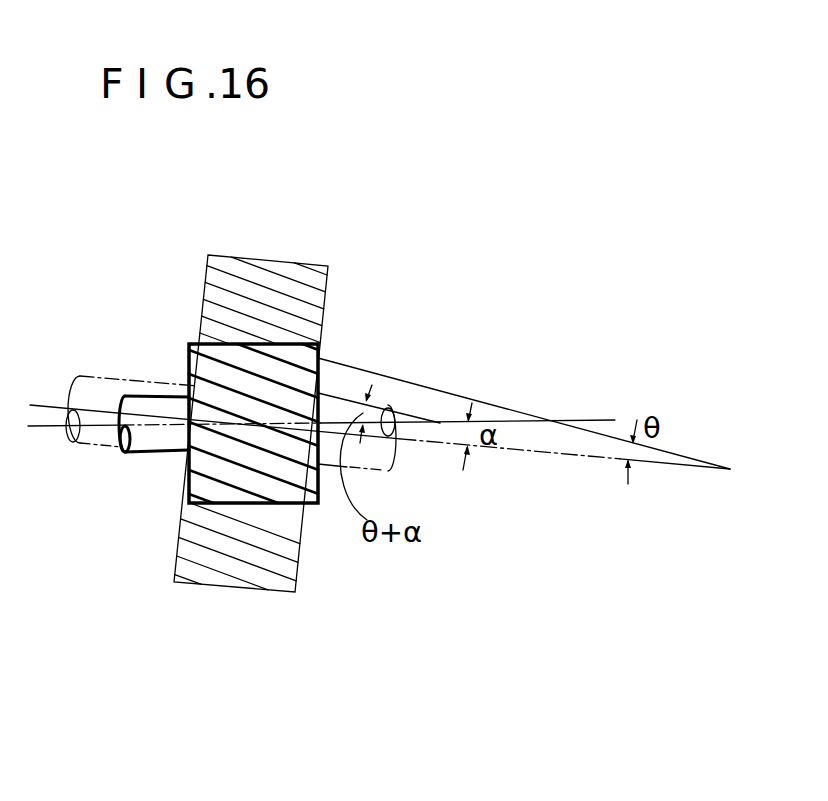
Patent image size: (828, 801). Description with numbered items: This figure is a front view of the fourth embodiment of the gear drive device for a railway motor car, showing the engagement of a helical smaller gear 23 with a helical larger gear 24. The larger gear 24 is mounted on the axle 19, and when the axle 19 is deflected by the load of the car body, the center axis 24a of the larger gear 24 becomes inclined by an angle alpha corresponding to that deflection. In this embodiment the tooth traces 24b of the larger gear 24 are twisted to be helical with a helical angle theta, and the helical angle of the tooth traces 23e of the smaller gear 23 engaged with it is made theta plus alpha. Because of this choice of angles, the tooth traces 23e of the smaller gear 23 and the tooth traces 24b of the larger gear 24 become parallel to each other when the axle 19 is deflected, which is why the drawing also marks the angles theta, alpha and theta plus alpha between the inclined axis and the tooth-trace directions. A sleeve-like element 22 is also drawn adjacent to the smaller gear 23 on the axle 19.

The axle 19 is at (84, 447).
The eccentric sleeve 22 is at (155, 396).
The smaller gear 23 is at (295, 344).
The tooth traces of the smaller gear 23e is at (280, 388).
The larger gear 24 is at (232, 589).
The center axis of the larger gear 24a is at (417, 441).
The tooth traces of the larger gear 24b is at (287, 535).